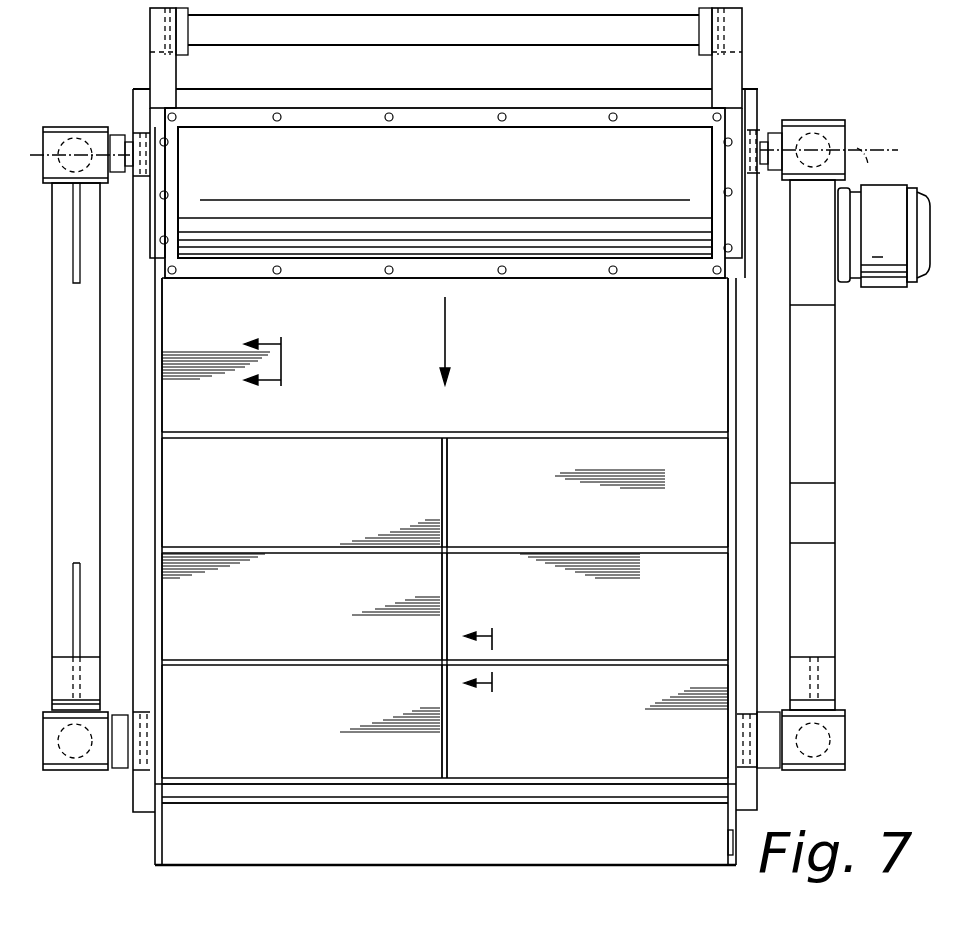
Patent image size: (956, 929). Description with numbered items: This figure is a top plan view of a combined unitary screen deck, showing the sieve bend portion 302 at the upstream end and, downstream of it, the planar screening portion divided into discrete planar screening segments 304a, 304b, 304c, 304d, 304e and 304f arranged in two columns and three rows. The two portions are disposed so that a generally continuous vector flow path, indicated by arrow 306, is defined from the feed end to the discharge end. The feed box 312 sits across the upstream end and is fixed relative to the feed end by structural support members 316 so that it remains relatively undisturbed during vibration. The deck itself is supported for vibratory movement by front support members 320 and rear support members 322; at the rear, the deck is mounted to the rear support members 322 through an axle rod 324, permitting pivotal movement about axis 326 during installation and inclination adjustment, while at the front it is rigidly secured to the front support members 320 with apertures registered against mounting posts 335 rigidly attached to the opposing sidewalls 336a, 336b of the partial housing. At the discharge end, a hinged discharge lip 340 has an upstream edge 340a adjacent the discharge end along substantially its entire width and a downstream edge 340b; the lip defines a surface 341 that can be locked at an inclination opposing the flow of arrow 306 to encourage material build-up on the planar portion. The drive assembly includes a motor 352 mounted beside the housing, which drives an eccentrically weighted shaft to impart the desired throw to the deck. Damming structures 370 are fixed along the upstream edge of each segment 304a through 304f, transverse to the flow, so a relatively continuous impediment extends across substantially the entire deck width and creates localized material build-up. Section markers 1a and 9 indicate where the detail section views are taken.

The sieve bend portion 302 is at (634, 360).
The planar screening segment 304a is at (372, 480).
The planar screening segment 304b is at (534, 488).
The planar screening segment 304c is at (366, 600).
The planar screening segment 304d is at (634, 606).
The planar screening segment 304e is at (290, 744).
The planar screening segment 304f is at (600, 746).
The arrow 306 is at (445, 343).
The feed box 312 is at (245, 276).
The structural support member 316 is at (176, 73).
The front support members 320 is at (78, 772).
The rear support members 322 is at (50, 126).
The axle rod 324 is at (131, 140).
The axis 326 is at (884, 163).
The mounting posts 335 is at (117, 772).
The sidewall 336a is at (757, 450).
The sidewall 336b is at (133, 380).
The hinged discharge lip 340 is at (150, 855).
The upstream edge 340a is at (193, 797).
The downstream edge 340b is at (532, 871).
The surface 341 is at (470, 844).
The motor 352 is at (874, 288).
The damming structures 370 is at (305, 438).
The section line 1a is at (260, 361).
The section line 9 is at (487, 661).